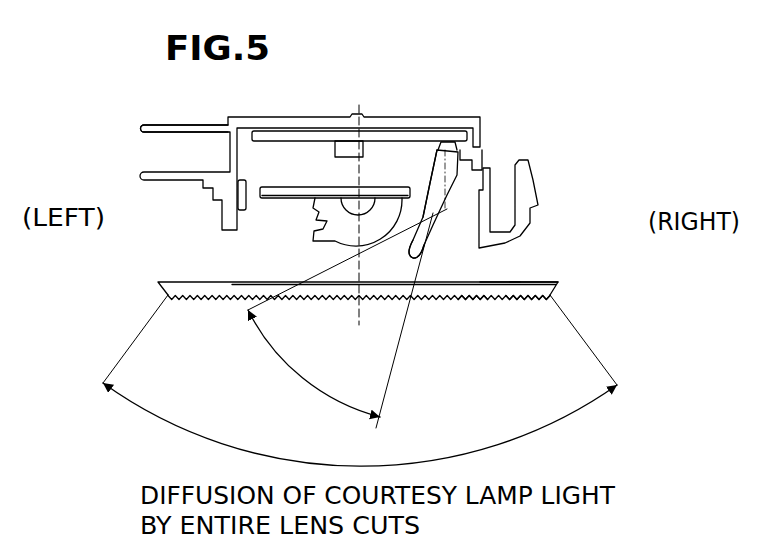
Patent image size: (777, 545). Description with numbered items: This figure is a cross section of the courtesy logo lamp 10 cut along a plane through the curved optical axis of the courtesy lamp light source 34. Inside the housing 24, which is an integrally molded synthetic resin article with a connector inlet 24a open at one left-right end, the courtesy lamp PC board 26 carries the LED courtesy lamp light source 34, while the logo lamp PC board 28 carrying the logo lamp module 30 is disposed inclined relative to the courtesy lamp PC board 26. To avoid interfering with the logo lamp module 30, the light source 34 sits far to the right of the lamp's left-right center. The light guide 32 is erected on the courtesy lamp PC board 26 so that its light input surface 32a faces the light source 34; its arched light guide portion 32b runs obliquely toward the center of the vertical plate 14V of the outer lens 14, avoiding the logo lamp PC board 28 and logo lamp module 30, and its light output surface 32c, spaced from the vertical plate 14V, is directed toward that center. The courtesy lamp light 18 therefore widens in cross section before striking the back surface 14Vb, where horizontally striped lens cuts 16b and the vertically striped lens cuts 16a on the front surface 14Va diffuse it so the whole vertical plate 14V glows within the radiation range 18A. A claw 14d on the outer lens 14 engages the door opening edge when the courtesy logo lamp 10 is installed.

The courtesy logo lamp 10 is at (563, 85).
The outer lens 14 is at (567, 285).
The claw 14d is at (533, 195).
The vertical plate 14V is at (433, 292).
The front surface 14Va is at (515, 300).
The back surface 14Vb is at (498, 283).
The lens cuts 16a is at (472, 303).
The lens cuts 16b is at (520, 283).
The courtesy lamp light 18 is at (388, 391).
The radiation range 18A is at (292, 372).
The housing 24 is at (422, 113).
The connector inlet 24a is at (170, 134).
The courtesy lamp PC board 26 is at (393, 140).
The logo lamp PC board 28 is at (278, 197).
The logo lamp module 30 is at (328, 218).
The light guide 32 is at (455, 185).
The light input surface 32a is at (448, 143).
The light guide portion 32b is at (437, 190).
The light output surface 32c is at (421, 248).
The courtesy lamp light source 34 is at (460, 143).